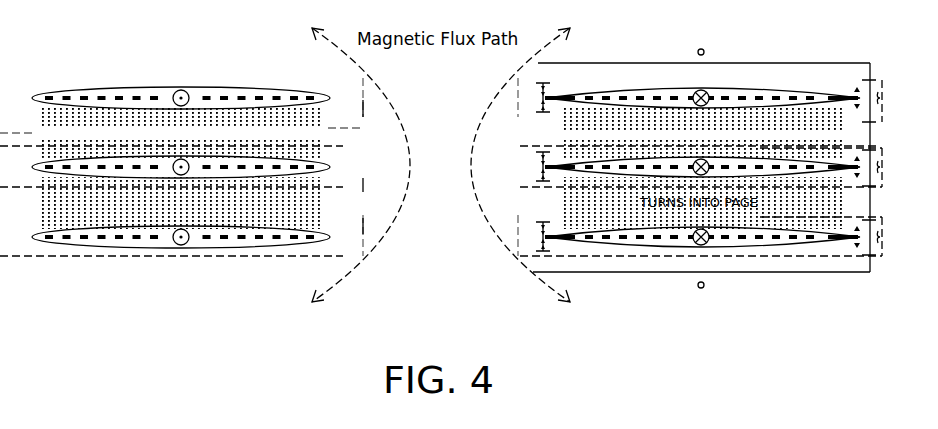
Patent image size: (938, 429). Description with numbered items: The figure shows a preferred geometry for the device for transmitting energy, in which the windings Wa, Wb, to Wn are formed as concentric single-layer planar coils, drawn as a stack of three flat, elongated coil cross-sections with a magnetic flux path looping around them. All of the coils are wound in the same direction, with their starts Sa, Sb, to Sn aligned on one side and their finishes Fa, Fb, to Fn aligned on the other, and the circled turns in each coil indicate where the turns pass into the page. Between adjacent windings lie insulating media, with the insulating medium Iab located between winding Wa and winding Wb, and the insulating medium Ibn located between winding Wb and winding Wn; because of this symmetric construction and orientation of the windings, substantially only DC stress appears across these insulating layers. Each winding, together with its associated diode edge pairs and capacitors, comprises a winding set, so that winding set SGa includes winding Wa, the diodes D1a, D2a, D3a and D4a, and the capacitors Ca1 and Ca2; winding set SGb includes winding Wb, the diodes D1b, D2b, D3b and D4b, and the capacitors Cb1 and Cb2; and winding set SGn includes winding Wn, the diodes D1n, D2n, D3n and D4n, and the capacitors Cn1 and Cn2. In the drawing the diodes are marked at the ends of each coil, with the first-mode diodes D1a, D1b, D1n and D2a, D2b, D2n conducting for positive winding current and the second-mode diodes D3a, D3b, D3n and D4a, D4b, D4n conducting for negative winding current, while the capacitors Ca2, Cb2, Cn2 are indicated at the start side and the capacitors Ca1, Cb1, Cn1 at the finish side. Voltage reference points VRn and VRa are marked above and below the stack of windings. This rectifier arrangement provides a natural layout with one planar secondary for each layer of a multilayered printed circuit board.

The winding Wn is at (553, 97).
The winding Wb is at (330, 167).
The winding Wa is at (553, 239).
The winding set SGn is at (363, 108).
The winding set SGb is at (363, 185).
The winding set SGa is at (363, 226).
The insulating medium Ibn is at (322, 138).
The insulating medium Iab is at (325, 193).
The capacitor Cn2 is at (540, 99).
The capacitor Cb2 is at (543, 167).
The capacitor Ca2 is at (540, 238).
The capacitor Cn1 is at (884, 101).
The capacitor Cb1 is at (884, 168).
The capacitor Ca1 is at (883, 237).
The diode D1n is at (557, 112).
The diode D2n is at (843, 87).
The diode D3n is at (557, 87).
The diode D4n is at (843, 111).
The diode D1b is at (557, 181).
The diode D2b is at (843, 156).
The diode D3b is at (557, 156).
The diode D4b is at (843, 180).
The diode D1a is at (557, 251).
The diode D2a is at (843, 226).
The diode D3a is at (557, 226).
The diode D4a is at (843, 250).
The start Sn is at (585, 100).
The start Sb is at (585, 169).
The start Sa is at (585, 239).
The finish Fn is at (826, 101).
The finish Fb is at (826, 170).
The finish Fa is at (826, 240).
The voltage reference n VRn is at (701, 45).
The voltage reference a VRa is at (701, 292).